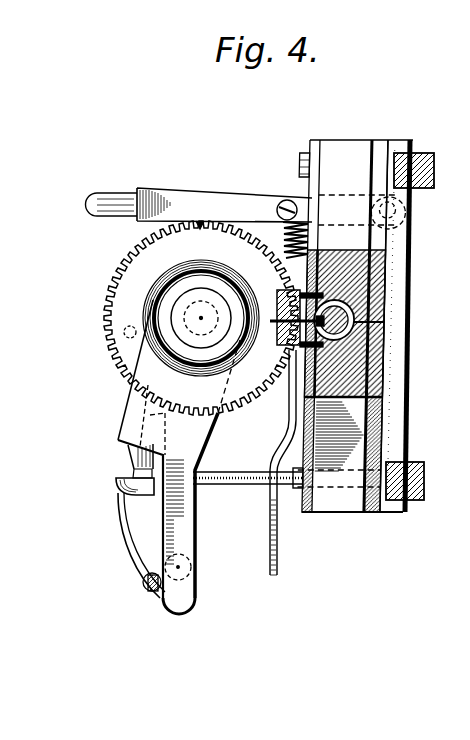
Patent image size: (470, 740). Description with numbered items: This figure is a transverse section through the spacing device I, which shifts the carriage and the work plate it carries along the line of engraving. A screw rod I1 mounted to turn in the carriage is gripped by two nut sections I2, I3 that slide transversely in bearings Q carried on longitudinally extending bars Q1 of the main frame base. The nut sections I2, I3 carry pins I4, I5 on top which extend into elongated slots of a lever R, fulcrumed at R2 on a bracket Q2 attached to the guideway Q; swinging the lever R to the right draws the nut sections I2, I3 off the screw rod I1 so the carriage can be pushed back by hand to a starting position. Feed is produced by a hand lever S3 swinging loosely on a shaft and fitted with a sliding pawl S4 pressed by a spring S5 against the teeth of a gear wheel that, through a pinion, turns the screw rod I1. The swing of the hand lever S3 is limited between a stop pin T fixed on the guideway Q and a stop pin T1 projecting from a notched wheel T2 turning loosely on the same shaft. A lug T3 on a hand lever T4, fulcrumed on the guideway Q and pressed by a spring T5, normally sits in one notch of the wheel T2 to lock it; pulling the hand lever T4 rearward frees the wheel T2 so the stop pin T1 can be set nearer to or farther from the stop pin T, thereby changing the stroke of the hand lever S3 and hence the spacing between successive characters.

The spacing device I is at (333, 320).
The screw rod I1 is at (366, 320).
The nut section I2 is at (390, 262).
The nut section I3 is at (392, 370).
The pin I4 is at (340, 300).
The pin I5 is at (298, 347).
The bearings (guideway) Q is at (408, 442).
The longitudinally extending bars Q1 is at (420, 167).
The bracket Q2 is at (282, 297).
The lever R is at (271, 536).
The fulcrum R2 is at (276, 325).
The stop pin T is at (246, 475).
The stop pin T1 is at (126, 334).
The notched wheel T2 is at (116, 277).
The lug T3 is at (200, 228).
The hand lever T4 is at (215, 198).
The spring T5 is at (284, 241).
The hand lever S3 is at (190, 528).
The sliding pawl S4 is at (134, 460).
The spring S5 is at (160, 525).